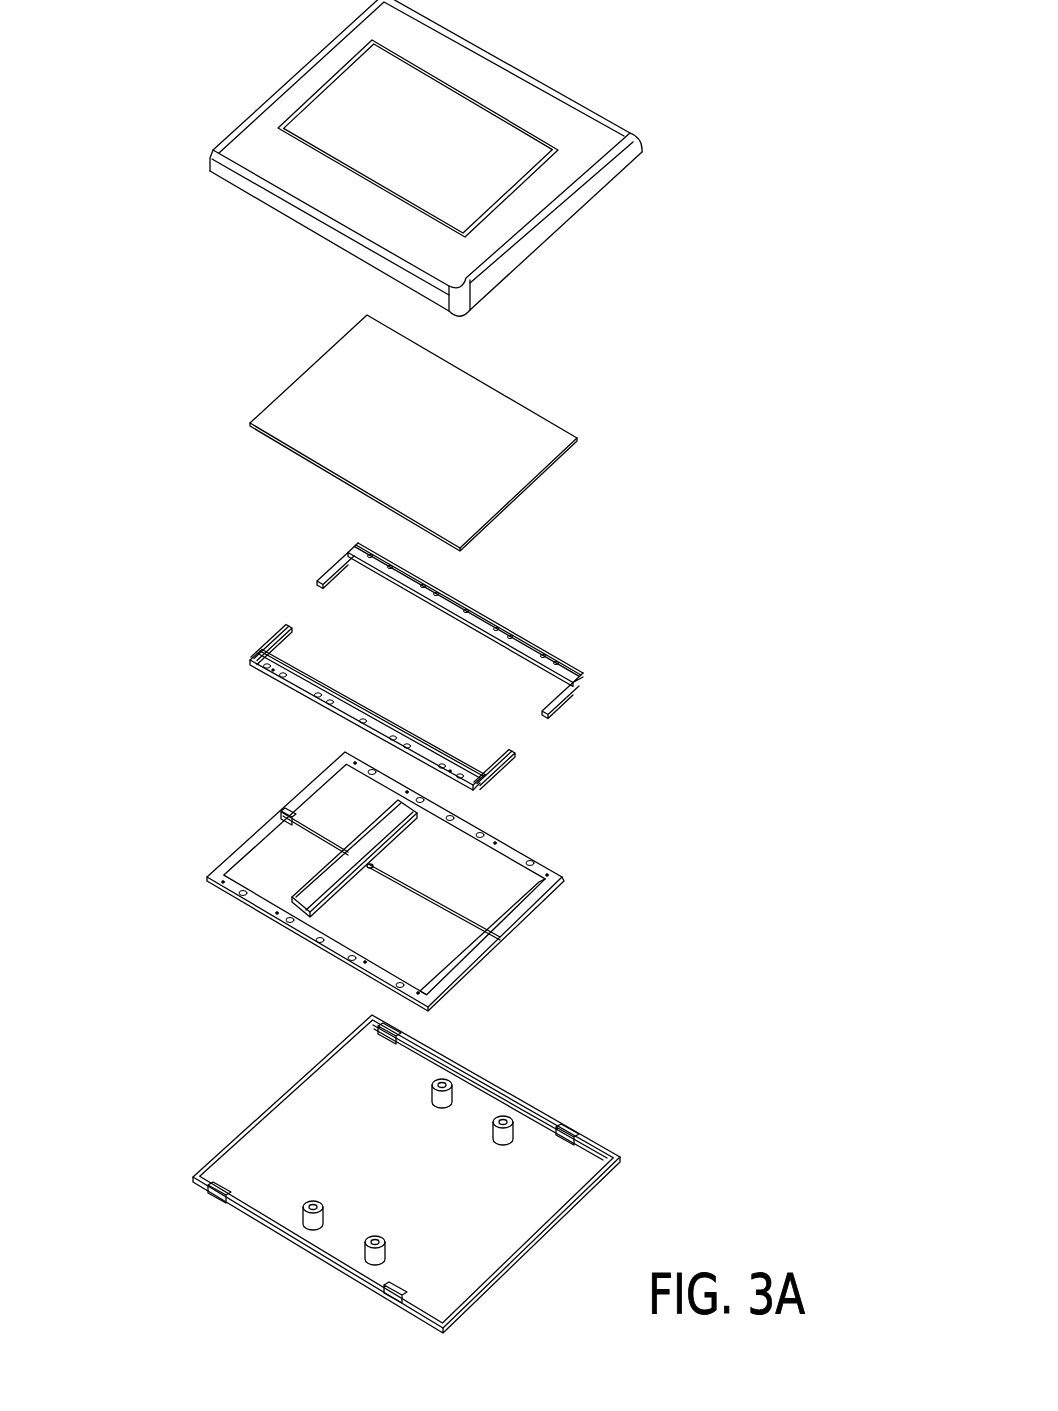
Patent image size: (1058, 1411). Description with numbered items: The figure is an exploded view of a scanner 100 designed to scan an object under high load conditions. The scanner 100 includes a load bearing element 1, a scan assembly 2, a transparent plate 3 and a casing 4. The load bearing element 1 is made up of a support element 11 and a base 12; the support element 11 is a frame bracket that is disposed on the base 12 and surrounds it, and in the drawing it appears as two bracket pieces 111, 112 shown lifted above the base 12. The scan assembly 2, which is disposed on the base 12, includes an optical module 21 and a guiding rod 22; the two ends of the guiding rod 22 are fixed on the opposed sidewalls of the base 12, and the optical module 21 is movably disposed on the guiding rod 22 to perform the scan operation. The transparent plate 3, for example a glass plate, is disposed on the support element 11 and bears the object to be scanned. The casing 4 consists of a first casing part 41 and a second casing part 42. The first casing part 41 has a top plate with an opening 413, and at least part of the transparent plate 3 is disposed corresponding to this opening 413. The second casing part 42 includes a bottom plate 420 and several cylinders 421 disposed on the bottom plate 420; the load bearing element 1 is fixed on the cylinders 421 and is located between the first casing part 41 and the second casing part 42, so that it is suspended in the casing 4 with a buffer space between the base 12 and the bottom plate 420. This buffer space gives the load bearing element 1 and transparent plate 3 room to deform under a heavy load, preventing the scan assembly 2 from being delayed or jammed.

The scanner 100 is at (776, 47).
The casing 4 is at (105, 298).
The first casing part 41 is at (275, 152).
The opening 413 is at (343, 100).
The second casing part 42 is at (305, 1140).
The bottom plate 420 is at (287, 1178).
The cylinder 421 is at (305, 1220).
The transparent plate 3 is at (332, 393).
The load bearing element 1 is at (770, 732).
The support element 11 is at (712, 678).
The first bracket 111 is at (587, 667).
The second bracket 112 is at (480, 780).
The base 12 is at (560, 939).
The scan assembly 2 is at (639, 968).
The optical module 21 is at (370, 865).
The guiding rod 22 is at (320, 882).